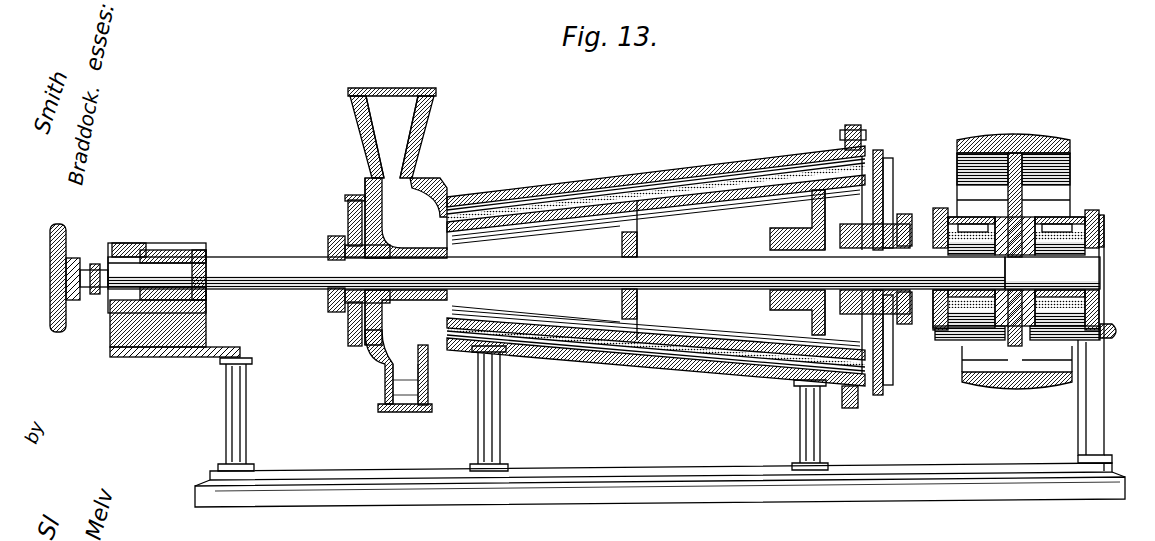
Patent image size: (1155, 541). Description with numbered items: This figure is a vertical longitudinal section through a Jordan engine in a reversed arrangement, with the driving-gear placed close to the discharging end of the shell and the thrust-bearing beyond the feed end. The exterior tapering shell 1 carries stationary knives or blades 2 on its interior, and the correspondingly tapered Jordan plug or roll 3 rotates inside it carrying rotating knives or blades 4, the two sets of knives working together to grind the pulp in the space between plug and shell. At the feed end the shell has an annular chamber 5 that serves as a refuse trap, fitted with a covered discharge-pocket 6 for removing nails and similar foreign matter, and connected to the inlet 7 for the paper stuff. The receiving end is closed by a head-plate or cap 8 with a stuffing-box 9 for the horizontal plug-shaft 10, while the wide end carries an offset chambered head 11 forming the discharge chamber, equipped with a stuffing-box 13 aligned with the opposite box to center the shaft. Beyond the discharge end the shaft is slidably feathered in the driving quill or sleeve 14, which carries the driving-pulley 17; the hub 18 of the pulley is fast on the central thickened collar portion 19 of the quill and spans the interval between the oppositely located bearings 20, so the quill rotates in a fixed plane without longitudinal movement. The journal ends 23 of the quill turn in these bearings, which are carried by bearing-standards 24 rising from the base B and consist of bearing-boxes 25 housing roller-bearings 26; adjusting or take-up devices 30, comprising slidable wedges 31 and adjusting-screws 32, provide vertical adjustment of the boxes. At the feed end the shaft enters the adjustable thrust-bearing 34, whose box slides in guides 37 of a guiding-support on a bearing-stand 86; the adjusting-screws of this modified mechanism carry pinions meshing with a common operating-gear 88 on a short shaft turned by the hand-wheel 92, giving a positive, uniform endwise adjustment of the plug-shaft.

The exterior tapering shell 1 is at (645, 168).
The knives or blades 2 is at (703, 170).
The Jordan plug or roll 3 is at (723, 265).
The knives or blades 4 is at (578, 192).
The annular chamber 5 is at (432, 194).
The discharge-pocket 6 is at (426, 385).
The inlet 7 is at (416, 146).
The head-plate or cap 8 is at (347, 220).
The stuffing-box 9 is at (328, 252).
The plug-shaft 10 is at (259, 267).
The offset chambered head 11 is at (874, 152).
The stuffing-box 13 is at (893, 222).
The driving quill or sleeve 14 is at (1040, 217).
The driving-pulley 17 is at (1033, 133).
The hub 18 is at (1003, 217).
The central thickened collar portion 19 is at (1028, 220).
The bearings 20 is at (962, 210).
The journal ends 23 is at (1103, 230).
The bearing-standards 24 is at (1087, 408).
The bearing-boxes 25 is at (934, 215).
The roller-bearings 26 is at (1084, 218).
The adjusting or take-up devices 30 is at (1116, 334).
The wedges 31 is at (935, 340).
The adjusting-screws 32 is at (950, 346).
The thrust-bearing 34 is at (164, 252).
The guides 37 is at (1040, 340).
The bearing-stand 86 is at (228, 327).
The operating-gear 88 is at (93, 298).
The hand-wheel 92 is at (52, 301).
The base B is at (663, 474).